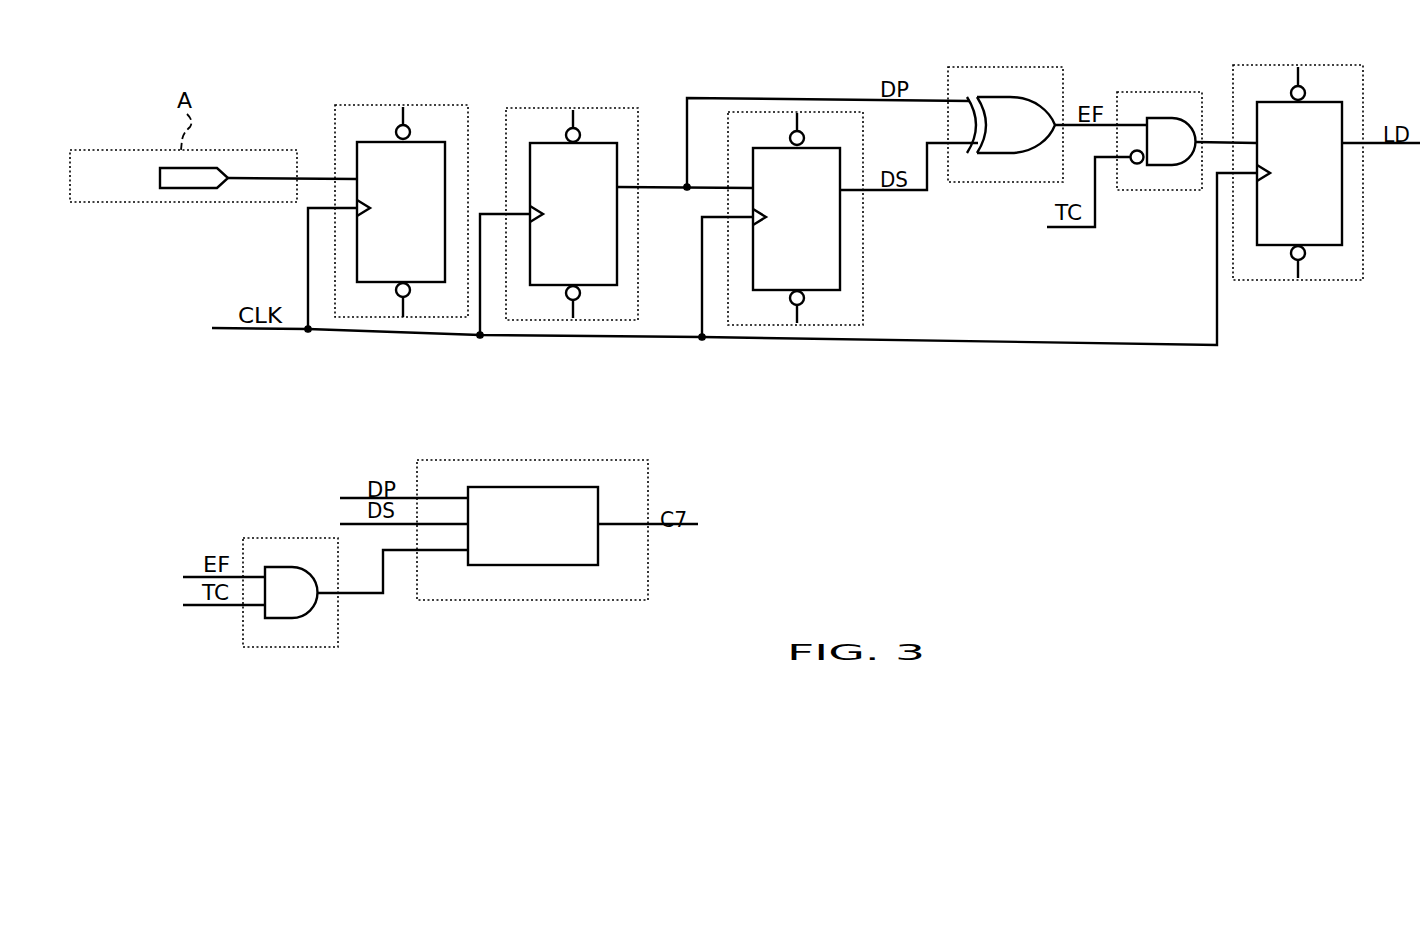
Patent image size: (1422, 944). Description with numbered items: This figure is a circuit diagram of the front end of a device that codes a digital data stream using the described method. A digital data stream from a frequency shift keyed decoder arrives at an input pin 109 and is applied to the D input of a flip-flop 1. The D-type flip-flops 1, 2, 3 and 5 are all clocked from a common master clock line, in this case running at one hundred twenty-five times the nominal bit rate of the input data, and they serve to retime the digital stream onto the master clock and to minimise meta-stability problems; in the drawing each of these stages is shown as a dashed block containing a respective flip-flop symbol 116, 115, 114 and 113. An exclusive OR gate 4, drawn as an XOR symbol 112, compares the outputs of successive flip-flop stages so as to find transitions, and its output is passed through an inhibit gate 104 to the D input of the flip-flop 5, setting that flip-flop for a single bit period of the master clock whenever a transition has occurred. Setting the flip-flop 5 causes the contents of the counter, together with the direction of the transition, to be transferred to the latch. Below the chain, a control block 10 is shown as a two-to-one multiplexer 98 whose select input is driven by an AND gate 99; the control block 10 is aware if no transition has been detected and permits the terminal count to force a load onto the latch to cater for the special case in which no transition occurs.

The flip-flop 1 is at (401, 192).
The D-type flip-flop 2 is at (572, 196).
The D-type flip-flop 3 is at (795, 198).
The exclusive OR gate 4 is at (1005, 107).
The D-type flip-flop 5 is at (1298, 157).
The control block 10 is at (532, 517).
The multiplexer 98 is at (512, 541).
The AND gate 99 is at (290, 592).
The inhibit AND gate 104 is at (1152, 159).
The input pin D10 109 is at (213, 176).
The XOR gate 112 is at (1006, 136).
The output flip-flop 113 is at (1290, 172).
The third flip-flop 114 is at (787, 218).
The second flip-flop 115 is at (563, 215).
The first flip-flop 116 is at (391, 212).